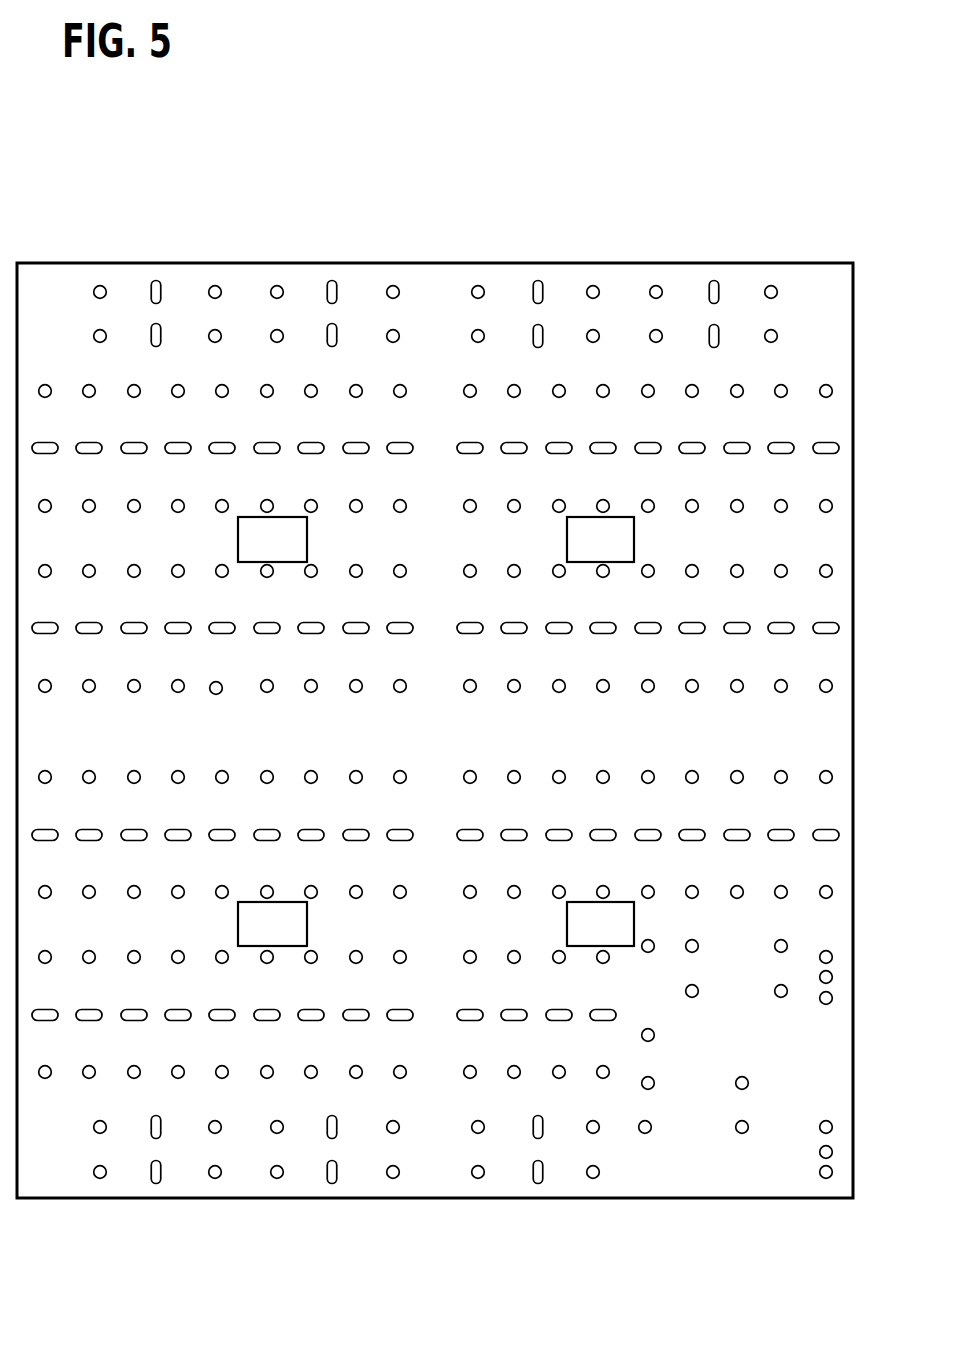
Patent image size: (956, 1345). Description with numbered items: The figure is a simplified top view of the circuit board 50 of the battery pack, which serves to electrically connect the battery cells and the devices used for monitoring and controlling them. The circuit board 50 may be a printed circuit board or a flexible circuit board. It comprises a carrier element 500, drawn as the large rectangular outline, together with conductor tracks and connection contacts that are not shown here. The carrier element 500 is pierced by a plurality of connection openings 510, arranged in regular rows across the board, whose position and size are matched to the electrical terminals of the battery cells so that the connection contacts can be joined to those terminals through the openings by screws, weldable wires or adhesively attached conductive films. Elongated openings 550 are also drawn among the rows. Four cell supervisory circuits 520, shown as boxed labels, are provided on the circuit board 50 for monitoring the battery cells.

The circuit board 50 is at (523, 186).
The carrier element 500 is at (416, 263).
The connection openings 510 is at (594, 285).
The elongated vertical contacts / slots 550 is at (158, 323).
The cell supervisory circuits 520 is at (436, 731).